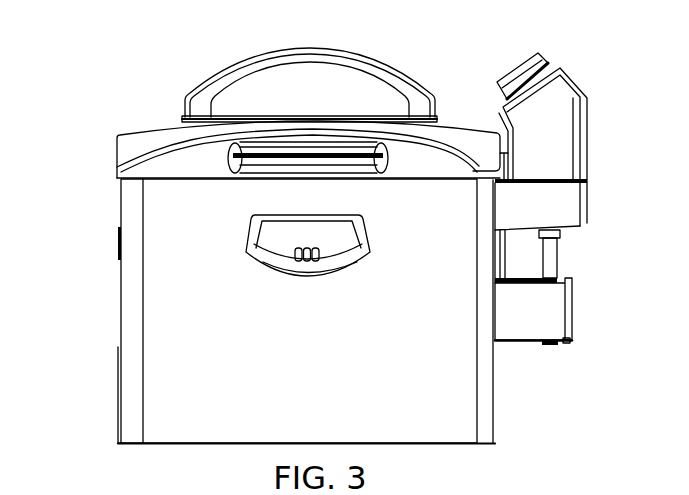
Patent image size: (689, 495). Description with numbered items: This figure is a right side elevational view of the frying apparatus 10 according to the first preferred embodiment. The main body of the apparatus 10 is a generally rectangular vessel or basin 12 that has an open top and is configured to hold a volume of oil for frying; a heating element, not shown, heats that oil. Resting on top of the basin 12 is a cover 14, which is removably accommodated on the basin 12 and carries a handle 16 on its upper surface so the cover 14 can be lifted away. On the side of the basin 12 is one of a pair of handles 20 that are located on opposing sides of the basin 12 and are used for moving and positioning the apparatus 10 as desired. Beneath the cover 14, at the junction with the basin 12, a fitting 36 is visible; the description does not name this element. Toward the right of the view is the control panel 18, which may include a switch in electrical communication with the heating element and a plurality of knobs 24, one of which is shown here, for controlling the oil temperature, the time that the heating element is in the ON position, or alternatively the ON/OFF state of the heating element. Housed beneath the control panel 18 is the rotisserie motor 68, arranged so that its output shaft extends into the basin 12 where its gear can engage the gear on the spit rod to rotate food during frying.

The frying apparatus 10 is at (57, 90).
The basin 12 is at (165, 310).
The cover 14 is at (140, 143).
The handle 16 is at (267, 55).
The control panel 18 is at (614, 88).
The handle 20 is at (270, 238).
The knob 24 is at (527, 53).
The latch cylinder 36 is at (355, 163).
The rotisserie motor 68 is at (534, 321).